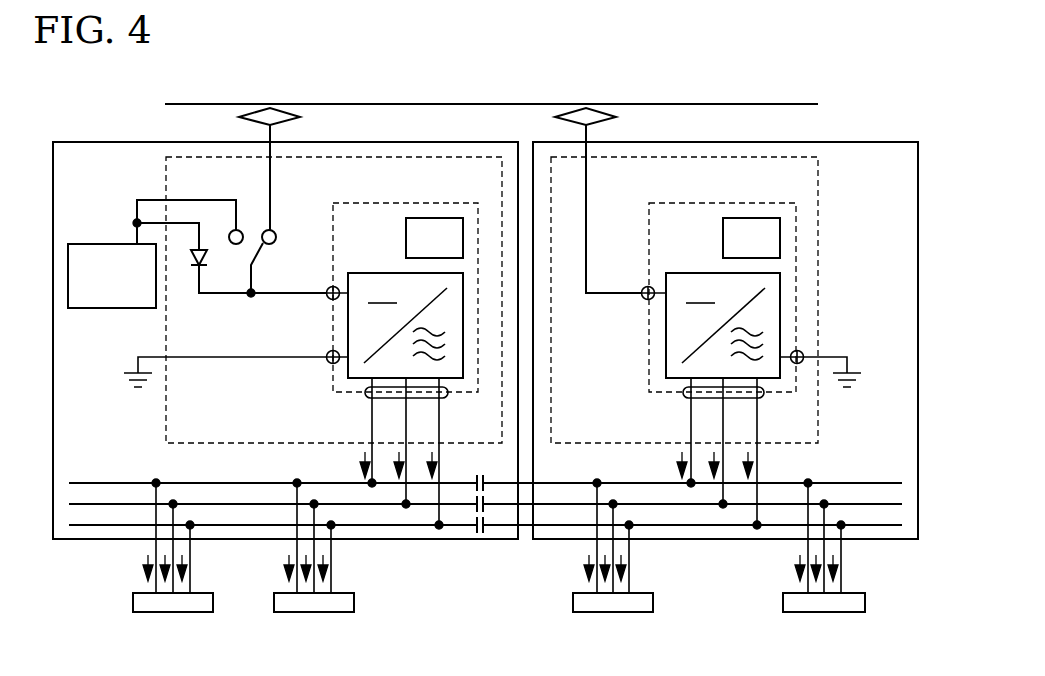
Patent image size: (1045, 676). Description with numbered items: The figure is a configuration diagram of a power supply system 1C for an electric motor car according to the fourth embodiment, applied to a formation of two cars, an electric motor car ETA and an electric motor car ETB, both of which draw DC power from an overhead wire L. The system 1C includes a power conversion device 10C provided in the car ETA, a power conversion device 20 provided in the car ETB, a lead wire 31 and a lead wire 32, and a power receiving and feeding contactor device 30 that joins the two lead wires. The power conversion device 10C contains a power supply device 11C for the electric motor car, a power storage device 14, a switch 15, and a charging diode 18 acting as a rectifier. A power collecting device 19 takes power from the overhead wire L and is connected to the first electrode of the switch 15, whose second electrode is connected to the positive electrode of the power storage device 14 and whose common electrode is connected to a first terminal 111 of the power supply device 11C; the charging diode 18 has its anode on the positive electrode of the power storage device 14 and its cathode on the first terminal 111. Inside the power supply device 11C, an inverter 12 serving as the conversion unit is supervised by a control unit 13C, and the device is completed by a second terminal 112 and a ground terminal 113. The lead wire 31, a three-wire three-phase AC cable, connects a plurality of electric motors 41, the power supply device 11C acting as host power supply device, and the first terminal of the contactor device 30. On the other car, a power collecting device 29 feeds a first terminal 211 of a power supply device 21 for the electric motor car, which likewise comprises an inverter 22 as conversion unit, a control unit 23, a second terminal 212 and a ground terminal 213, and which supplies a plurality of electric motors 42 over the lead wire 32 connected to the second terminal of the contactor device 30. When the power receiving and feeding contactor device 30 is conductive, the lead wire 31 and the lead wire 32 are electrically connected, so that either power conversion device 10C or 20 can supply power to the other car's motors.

The power supply system for electric motor car 1C is at (946, 78).
The electric motor car ETA is at (112, 142).
The electric motor car ETB is at (883, 142).
The overhead wire L is at (750, 104).
The power conversion device 10C is at (166, 170).
The power supply device for electric motor car 11C is at (403, 203).
The inverter 12 is at (367, 273).
The control unit 13C is at (436, 218).
The power storage device 14 is at (88, 244).
The switch 15 is at (253, 238).
The charging diode 18 is at (193, 262).
The power collecting device 19 is at (288, 108).
The first terminal 111 is at (326, 297).
The second terminal 112 is at (365, 392).
The ground terminal 113 is at (326, 361).
The power conversion device 20 is at (818, 170).
The power supply device for electric motor car 21 is at (703, 203).
The inverter 22 is at (683, 273).
The control unit 23 is at (754, 218).
The power collecting device 29 is at (603, 108).
The first terminal 211 is at (641, 297).
The second terminal 212 is at (683, 392).
The ground terminal 213 is at (804, 353).
The power receiving and feeding contactor device 30 is at (475, 533).
The lead wire 31 is at (142, 470).
The lead wire 32 is at (836, 468).
The electric motors 41 is at (210, 593).
The electric motors 42 is at (650, 593).